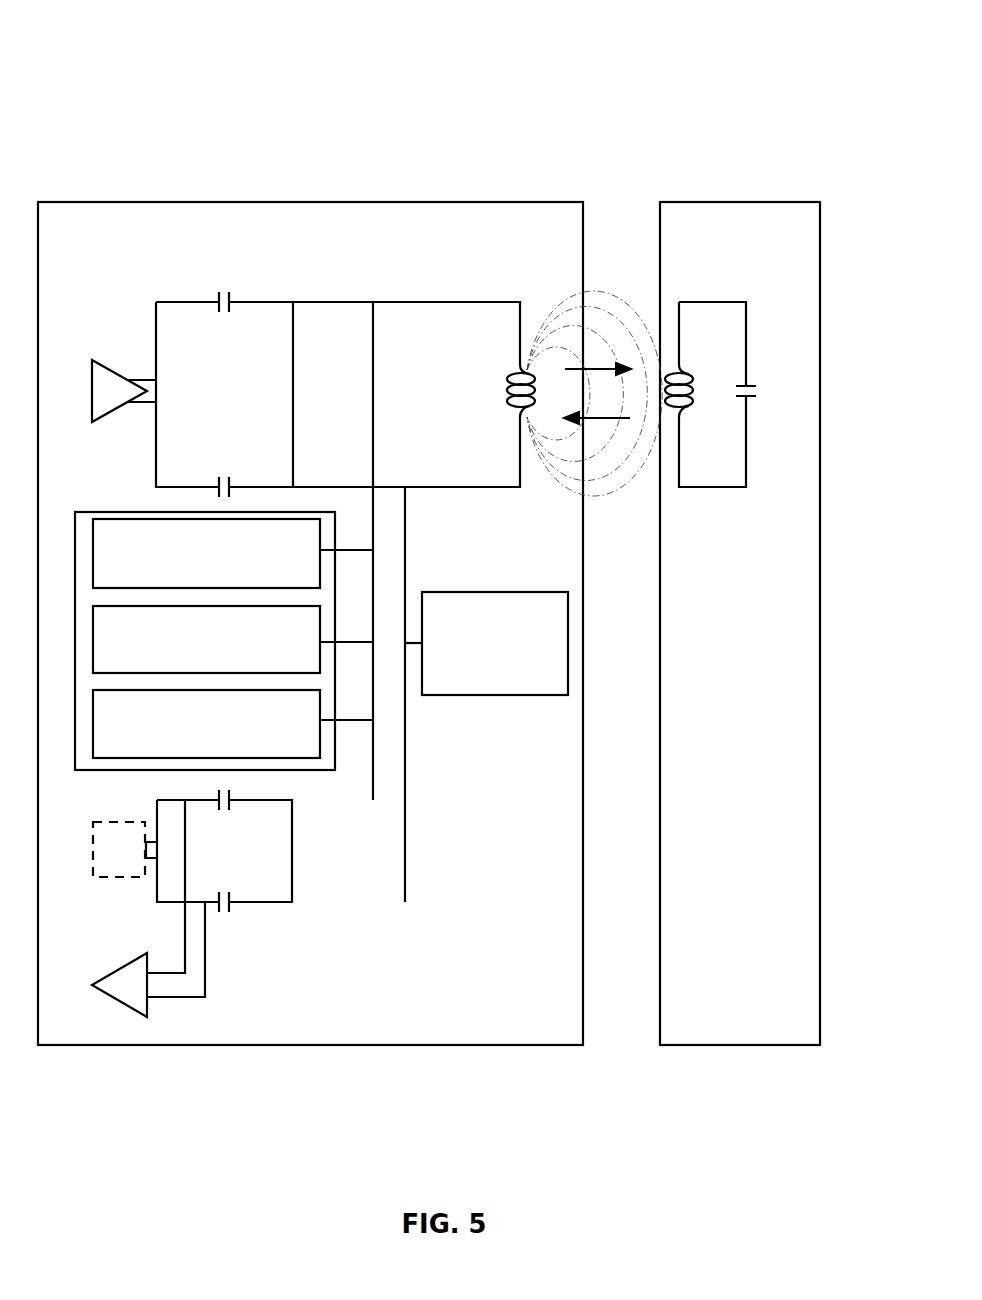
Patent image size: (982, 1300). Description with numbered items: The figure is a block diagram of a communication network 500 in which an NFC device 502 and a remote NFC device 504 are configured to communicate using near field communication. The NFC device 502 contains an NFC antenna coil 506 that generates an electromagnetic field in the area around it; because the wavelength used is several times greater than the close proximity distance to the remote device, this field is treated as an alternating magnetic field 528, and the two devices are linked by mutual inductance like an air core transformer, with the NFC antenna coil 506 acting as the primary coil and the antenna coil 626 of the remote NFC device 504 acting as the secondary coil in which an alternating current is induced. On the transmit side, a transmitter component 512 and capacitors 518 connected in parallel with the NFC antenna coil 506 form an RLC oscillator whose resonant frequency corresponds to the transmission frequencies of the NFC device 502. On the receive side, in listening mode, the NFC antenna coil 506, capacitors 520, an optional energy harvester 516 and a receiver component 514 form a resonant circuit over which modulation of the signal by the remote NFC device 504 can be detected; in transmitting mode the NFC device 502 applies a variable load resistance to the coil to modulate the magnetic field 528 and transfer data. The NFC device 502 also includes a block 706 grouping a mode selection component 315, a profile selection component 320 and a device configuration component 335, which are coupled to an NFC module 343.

The communication network 500 is at (692, 54).
The NFC device 502 is at (249, 202).
The remote NFC device 504 is at (764, 202).
The NFC antenna coil 506 is at (520, 407).
The transmitter component 512 is at (111, 372).
The receiver component 514 is at (130, 962).
The energy harvester 516 is at (120, 822).
The capacitors 518 is at (229, 312).
The capacitors 520 is at (229, 810).
The magnetic field 528 is at (567, 297).
The remote NFC antenna coil 626 is at (680, 420).
The NFC controller component stack 706 is at (218, 614).
The mode selection component 315 is at (233, 553).
The profile selection component 320 is at (233, 639).
The device configuration component 335 is at (233, 724).
The NFC module 343 is at (486, 643).